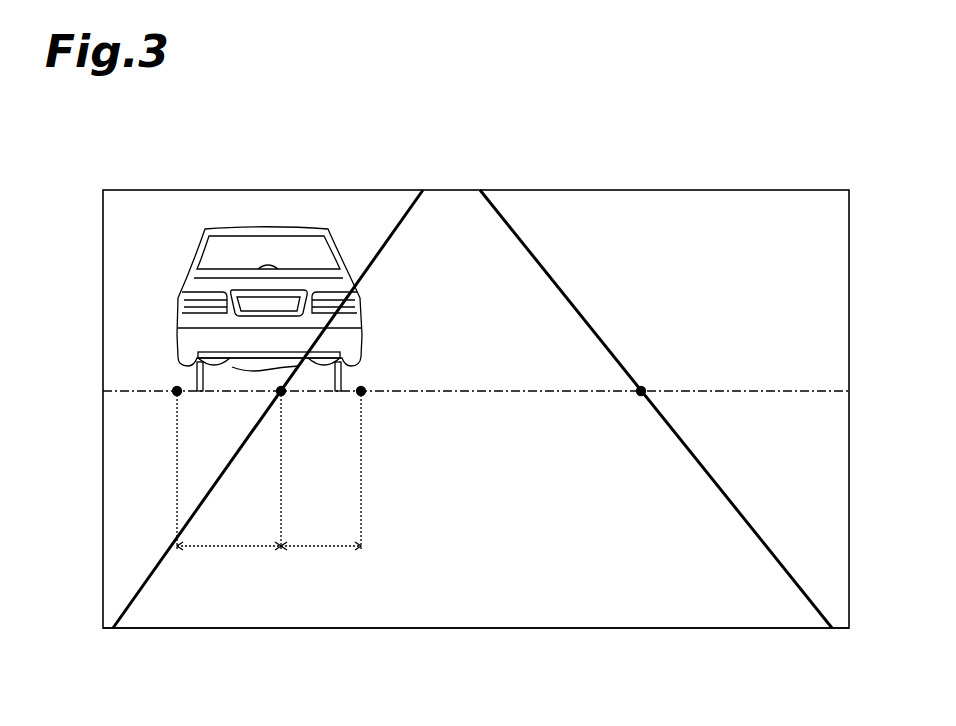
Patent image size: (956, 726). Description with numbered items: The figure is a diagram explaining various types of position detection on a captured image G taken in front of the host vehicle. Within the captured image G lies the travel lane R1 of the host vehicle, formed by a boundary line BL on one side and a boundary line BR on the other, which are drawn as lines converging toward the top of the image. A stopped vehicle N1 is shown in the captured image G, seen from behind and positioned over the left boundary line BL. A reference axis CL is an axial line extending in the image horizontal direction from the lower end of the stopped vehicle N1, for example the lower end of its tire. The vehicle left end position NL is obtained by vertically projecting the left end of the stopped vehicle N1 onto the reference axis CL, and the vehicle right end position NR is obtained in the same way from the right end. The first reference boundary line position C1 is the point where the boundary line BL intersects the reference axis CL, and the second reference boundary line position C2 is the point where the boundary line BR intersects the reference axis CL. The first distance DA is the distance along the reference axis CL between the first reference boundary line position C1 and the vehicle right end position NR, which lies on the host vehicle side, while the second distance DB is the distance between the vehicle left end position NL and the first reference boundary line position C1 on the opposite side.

The captured image G is at (712, 190).
The stopped vehicle N1 is at (200, 240).
The boundary line BL is at (387, 249).
The boundary line BR is at (521, 250).
The first reference boundary line position C1 is at (290, 397).
The second reference boundary line position C2 is at (648, 388).
The vehicle left end position NL is at (172, 396).
The vehicle right end position NR is at (367, 395).
The reference axis CL is at (545, 394).
The travel lane R1 is at (462, 610).
The second distance DB is at (218, 510).
The first distance DA is at (330, 510).